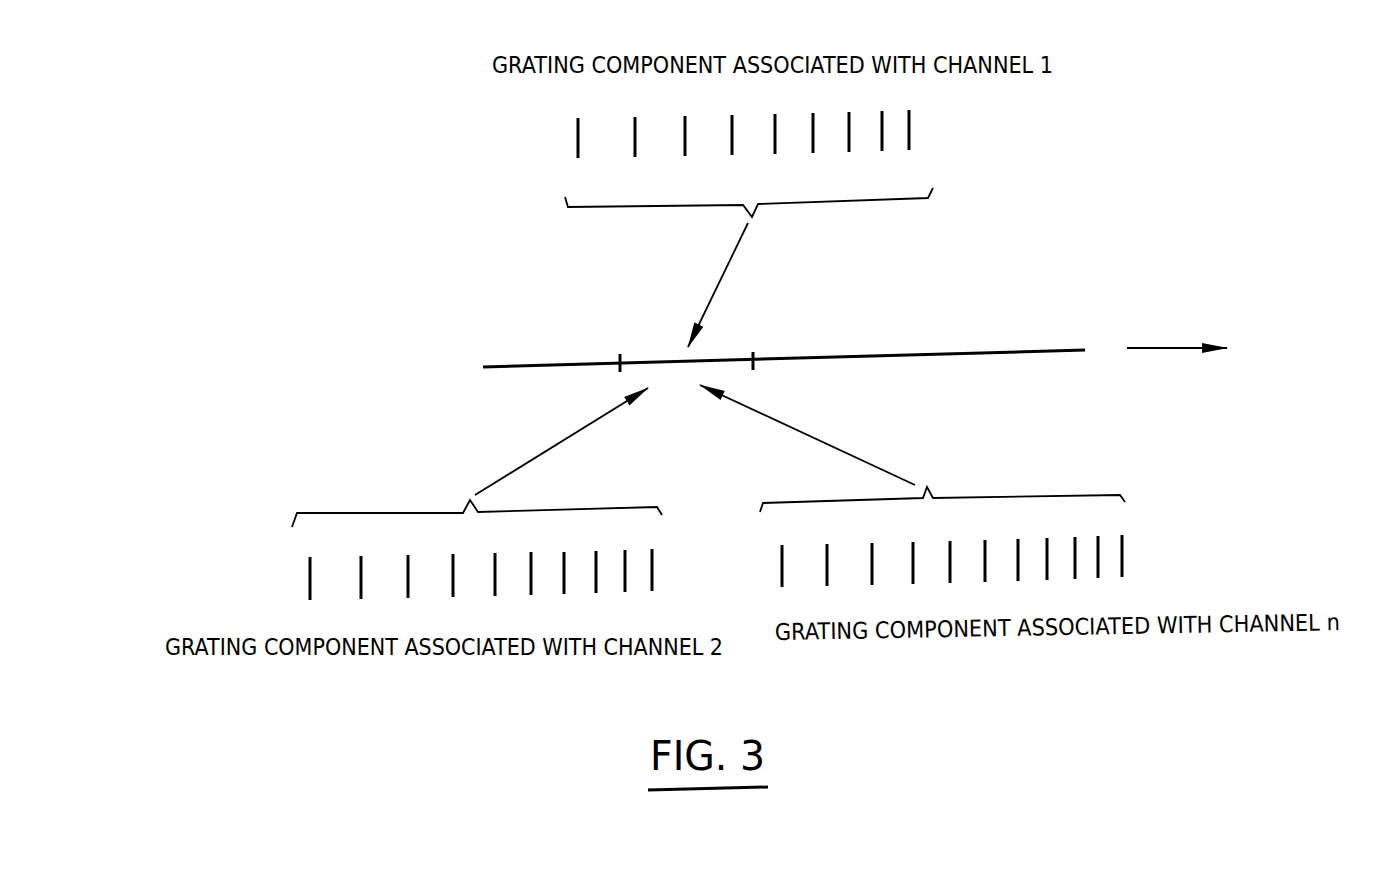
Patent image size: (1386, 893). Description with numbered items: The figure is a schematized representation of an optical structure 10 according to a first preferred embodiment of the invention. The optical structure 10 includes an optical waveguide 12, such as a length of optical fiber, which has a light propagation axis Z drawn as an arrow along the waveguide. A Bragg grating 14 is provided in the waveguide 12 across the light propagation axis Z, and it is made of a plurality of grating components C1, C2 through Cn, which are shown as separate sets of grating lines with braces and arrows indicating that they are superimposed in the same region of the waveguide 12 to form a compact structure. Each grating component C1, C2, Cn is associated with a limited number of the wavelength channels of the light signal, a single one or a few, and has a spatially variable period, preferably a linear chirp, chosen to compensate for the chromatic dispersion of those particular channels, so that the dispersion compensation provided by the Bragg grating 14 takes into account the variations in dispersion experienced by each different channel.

The optical structure 10 is at (839, 266).
The optical waveguide 12 is at (883, 352).
The Bragg grating 14 is at (647, 353).
The grating component C1 is at (555, 141).
The grating component C2 is at (295, 585).
The grating component Cn is at (773, 557).
The light propagation axis Z is at (1152, 348).